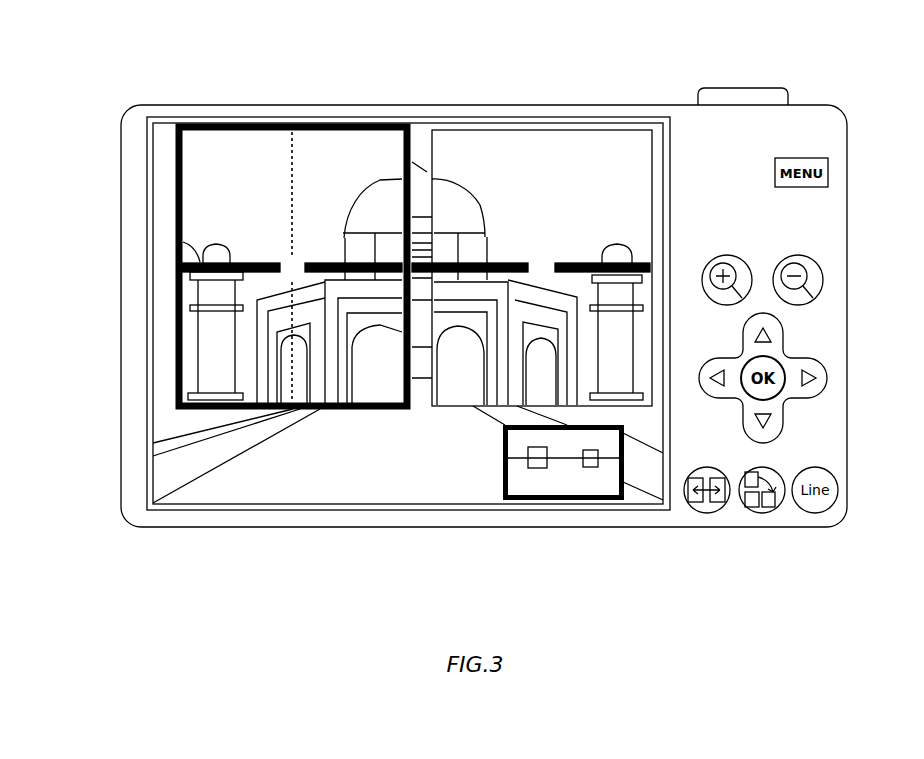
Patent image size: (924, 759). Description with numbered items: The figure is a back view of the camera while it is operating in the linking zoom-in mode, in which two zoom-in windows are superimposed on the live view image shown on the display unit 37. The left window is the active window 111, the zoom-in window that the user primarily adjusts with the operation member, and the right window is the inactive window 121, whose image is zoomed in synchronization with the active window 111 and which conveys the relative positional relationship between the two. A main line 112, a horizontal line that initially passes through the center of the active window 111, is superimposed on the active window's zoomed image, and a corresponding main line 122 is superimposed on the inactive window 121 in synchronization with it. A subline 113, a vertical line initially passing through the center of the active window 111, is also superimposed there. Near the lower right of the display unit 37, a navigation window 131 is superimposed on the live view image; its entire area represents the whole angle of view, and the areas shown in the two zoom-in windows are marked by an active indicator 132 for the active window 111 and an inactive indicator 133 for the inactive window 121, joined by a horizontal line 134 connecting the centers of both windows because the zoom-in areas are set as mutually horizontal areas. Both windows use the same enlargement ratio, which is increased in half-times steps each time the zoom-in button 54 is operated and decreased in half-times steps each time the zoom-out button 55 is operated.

The display unit 37 is at (617, 118).
The zoom-in button 54 is at (725, 262).
The zoom-out button 55 is at (803, 256).
The active window 111 is at (218, 122).
The main line 112 is at (185, 240).
The subline 113 is at (303, 157).
The inactive window 121 is at (460, 125).
The main line 122 is at (568, 263).
The navigation window 131 is at (628, 497).
The active indicator 132 is at (537, 469).
The inactive indicator 133 is at (590, 468).
The horizontal line 134 is at (503, 485).